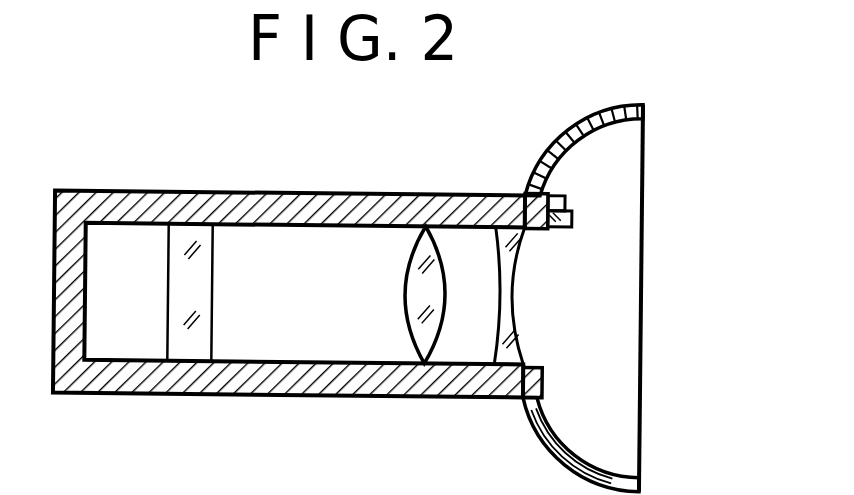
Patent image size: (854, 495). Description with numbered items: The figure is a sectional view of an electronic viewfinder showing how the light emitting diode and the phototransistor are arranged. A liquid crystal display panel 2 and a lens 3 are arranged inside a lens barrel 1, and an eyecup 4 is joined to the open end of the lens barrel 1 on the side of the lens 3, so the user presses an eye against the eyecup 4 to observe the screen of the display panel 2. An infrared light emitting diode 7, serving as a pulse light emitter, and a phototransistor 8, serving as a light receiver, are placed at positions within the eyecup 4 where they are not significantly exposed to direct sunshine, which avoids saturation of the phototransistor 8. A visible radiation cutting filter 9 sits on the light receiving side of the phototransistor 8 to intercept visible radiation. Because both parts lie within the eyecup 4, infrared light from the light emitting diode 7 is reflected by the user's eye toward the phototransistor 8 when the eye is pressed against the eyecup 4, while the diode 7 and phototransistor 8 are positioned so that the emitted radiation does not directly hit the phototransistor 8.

The lens barrel 1 is at (104, 376).
The liquid crystal display panel 2 is at (187, 233).
The lens 3 is at (498, 328).
The eyecup 4 is at (537, 428).
The infrared light emitting diode 7 is at (564, 196).
The phototransistor 8 is at (560, 228).
The visible radiation cutting filter 9 is at (571, 216).